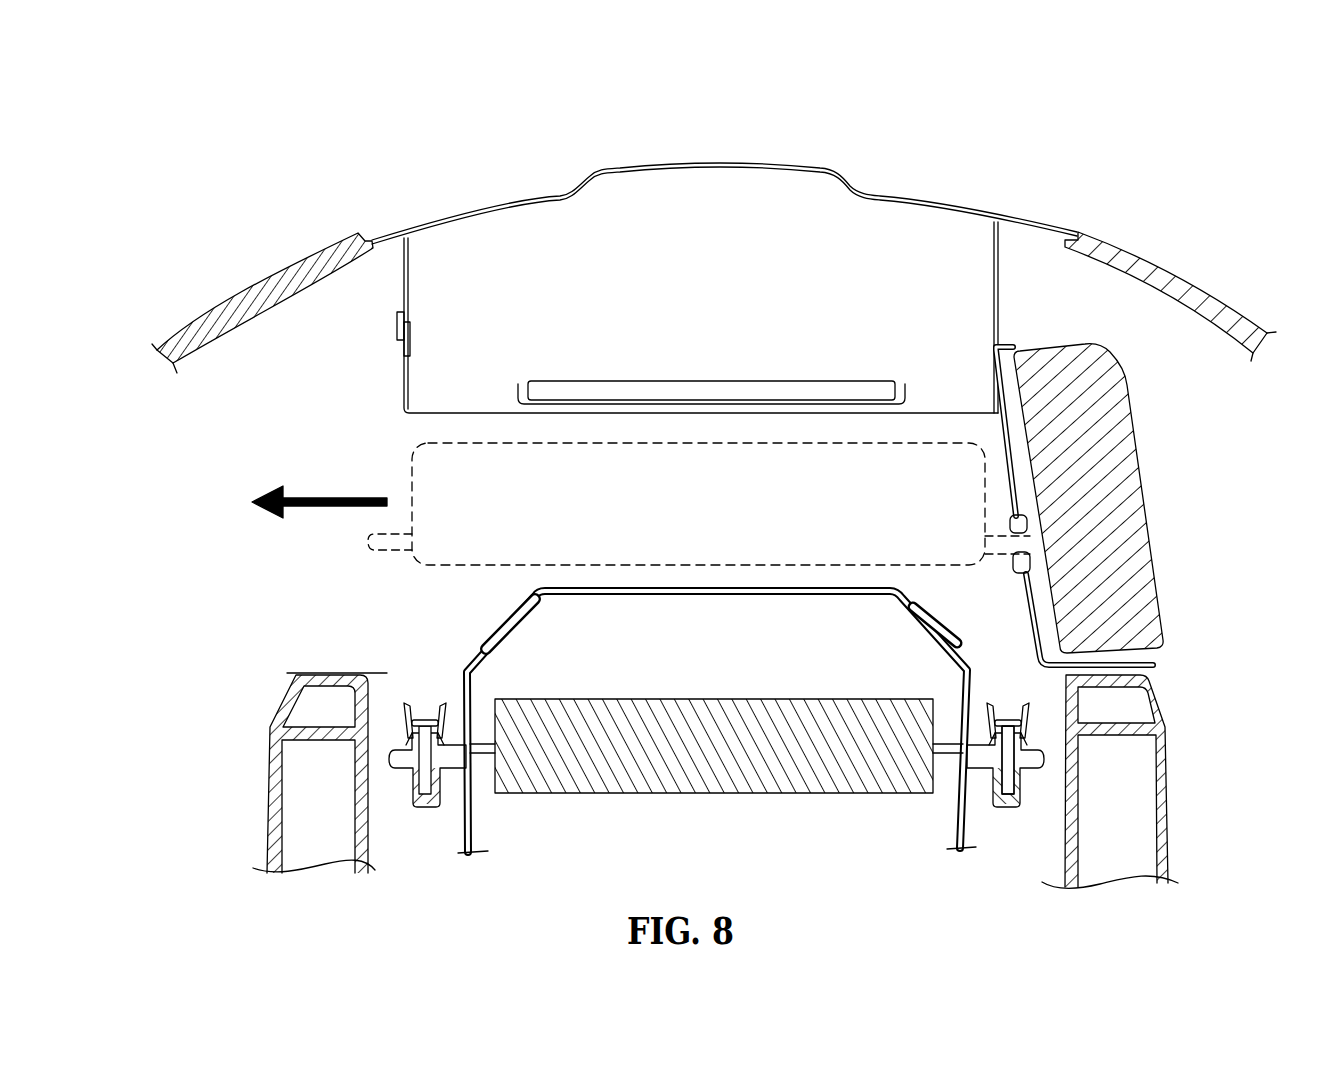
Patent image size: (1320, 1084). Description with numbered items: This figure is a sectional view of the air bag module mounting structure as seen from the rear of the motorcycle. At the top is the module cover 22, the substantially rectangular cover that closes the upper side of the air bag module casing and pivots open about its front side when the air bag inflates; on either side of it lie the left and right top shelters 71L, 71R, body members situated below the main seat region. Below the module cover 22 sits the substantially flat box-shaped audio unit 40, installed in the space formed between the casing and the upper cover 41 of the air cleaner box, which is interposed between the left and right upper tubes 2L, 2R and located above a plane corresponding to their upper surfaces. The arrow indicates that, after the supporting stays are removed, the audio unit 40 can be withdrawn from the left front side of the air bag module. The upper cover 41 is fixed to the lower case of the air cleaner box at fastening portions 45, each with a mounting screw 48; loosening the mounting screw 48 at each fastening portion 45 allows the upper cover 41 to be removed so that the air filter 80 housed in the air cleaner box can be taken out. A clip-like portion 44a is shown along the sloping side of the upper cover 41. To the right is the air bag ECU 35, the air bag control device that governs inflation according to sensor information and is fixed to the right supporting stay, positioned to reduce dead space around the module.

The module cover 22 is at (853, 153).
The top shelter 71L is at (290, 267).
The top shelter 71R is at (1130, 255).
The air bag ECU 35 is at (1121, 408).
The audio unit 40 is at (412, 465).
The upper cover 41 is at (683, 587).
The clip 44a is at (932, 694).
The air filter 80 is at (737, 720).
The fastening portion 45 is at (423, 697).
The mounting screw 48 is at (1010, 737).
The upper tube 2L is at (268, 803).
The upper tube 2R is at (1165, 800).